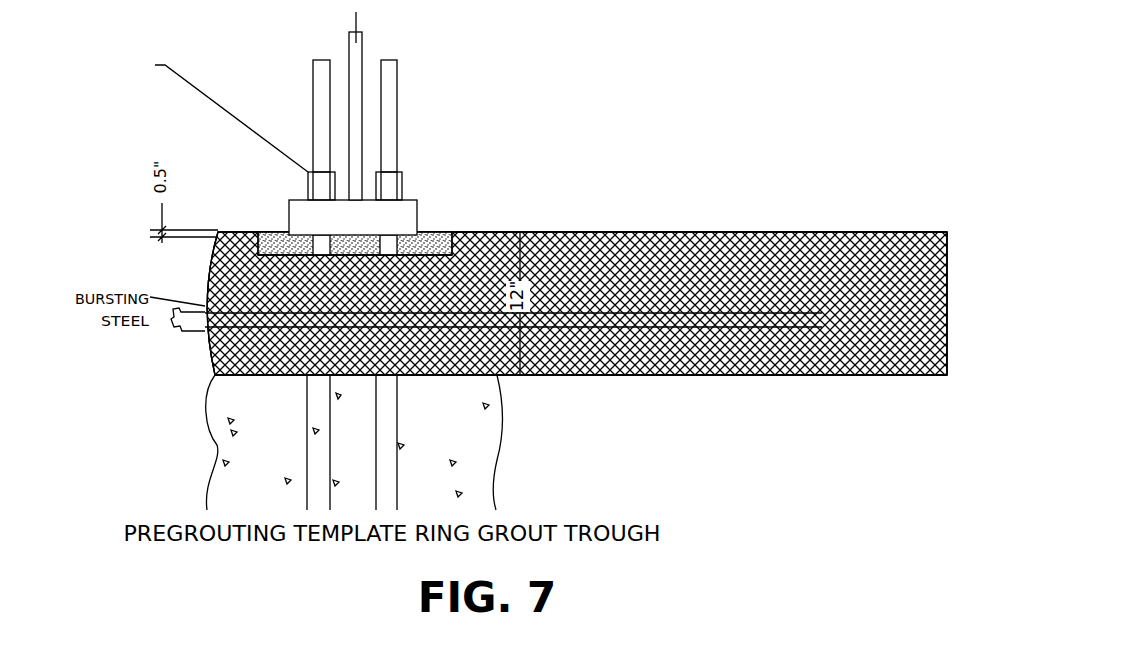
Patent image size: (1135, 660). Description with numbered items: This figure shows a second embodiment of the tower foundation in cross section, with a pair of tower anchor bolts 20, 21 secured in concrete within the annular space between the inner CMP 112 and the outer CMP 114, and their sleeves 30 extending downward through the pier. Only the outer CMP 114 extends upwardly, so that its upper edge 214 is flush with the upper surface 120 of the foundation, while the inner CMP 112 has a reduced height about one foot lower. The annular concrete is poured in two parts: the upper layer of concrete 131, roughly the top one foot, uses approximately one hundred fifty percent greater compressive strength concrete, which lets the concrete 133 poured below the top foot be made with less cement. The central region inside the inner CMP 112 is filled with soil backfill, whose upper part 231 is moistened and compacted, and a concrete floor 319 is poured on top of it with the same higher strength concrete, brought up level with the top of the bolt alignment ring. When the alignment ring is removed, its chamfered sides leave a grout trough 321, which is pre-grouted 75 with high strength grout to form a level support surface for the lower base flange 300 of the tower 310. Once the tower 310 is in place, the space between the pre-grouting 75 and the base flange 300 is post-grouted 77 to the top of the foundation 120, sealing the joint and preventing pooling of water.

The anchor bolt 20 is at (405, 116).
The anchor bolt 21 is at (182, 124).
The bolt sleeve 30 is at (333, 460).
The pre-grouting 75 is at (305, 232).
The post-grouting 77 is at (329, 192).
The inner CMP 112 is at (503, 423).
The outer CMP 114 is at (213, 376).
The top surface of the foundation 120 is at (449, 230).
The upper layer of concrete 131 is at (219, 275).
The concrete poured below the top foot 133 is at (445, 398).
The upper edge of the outer CMP 214 is at (218, 235).
The upper part of the central region 231 is at (810, 423).
The lower base flange 300 is at (289, 200).
The tower 310 is at (363, 53).
The concrete floor 319 is at (760, 232).
The grout trough 321 is at (257, 249).